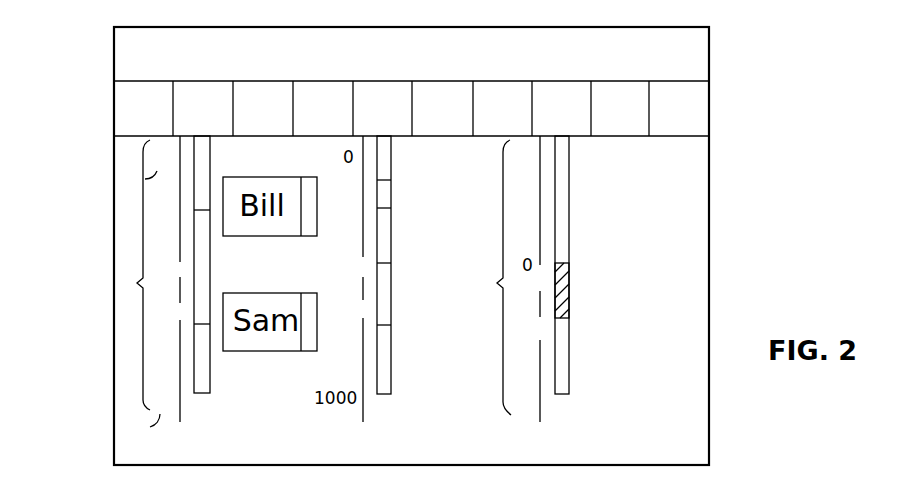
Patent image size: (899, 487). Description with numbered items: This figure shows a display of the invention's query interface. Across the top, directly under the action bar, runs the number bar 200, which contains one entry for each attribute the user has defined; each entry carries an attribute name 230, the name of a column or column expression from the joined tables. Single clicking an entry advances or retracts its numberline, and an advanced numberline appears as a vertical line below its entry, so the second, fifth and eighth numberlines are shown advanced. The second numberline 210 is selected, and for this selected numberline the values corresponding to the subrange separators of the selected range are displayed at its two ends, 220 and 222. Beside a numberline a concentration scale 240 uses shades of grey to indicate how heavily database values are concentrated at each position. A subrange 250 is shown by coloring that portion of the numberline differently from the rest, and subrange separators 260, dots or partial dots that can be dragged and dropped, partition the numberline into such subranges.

The number bar 200 is at (710, 111).
The numberline 210 is at (132, 283).
The subrange separator value 220 is at (150, 176).
The subrange separator value 222 is at (155, 418).
The attribute name 230 is at (263, 93).
The concentration scale 240 is at (494, 277).
The subrange 250 is at (569, 289).
The subrange separator 260 is at (383, 328).